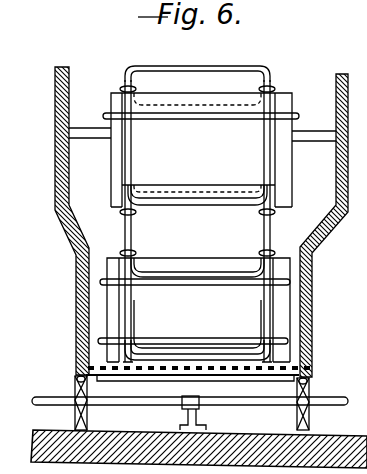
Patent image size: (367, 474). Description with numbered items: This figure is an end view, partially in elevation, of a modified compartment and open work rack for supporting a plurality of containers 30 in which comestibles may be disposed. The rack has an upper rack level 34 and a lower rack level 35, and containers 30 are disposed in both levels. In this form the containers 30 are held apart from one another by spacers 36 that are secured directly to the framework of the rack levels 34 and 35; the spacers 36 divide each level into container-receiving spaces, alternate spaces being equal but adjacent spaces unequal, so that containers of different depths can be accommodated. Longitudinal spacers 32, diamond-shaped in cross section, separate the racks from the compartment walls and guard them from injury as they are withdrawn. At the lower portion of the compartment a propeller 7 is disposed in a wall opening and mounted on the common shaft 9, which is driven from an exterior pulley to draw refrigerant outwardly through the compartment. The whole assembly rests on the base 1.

The base 1 is at (331, 442).
The propeller 7 is at (86, 417).
The common shaft 9 is at (227, 413).
The container 30 is at (198, 227).
The longitudinal spacer 32 is at (312, 135).
The upper rack level 34 is at (133, 145).
The lower rack level 35 is at (131, 313).
The spacer 36 is at (211, 103).